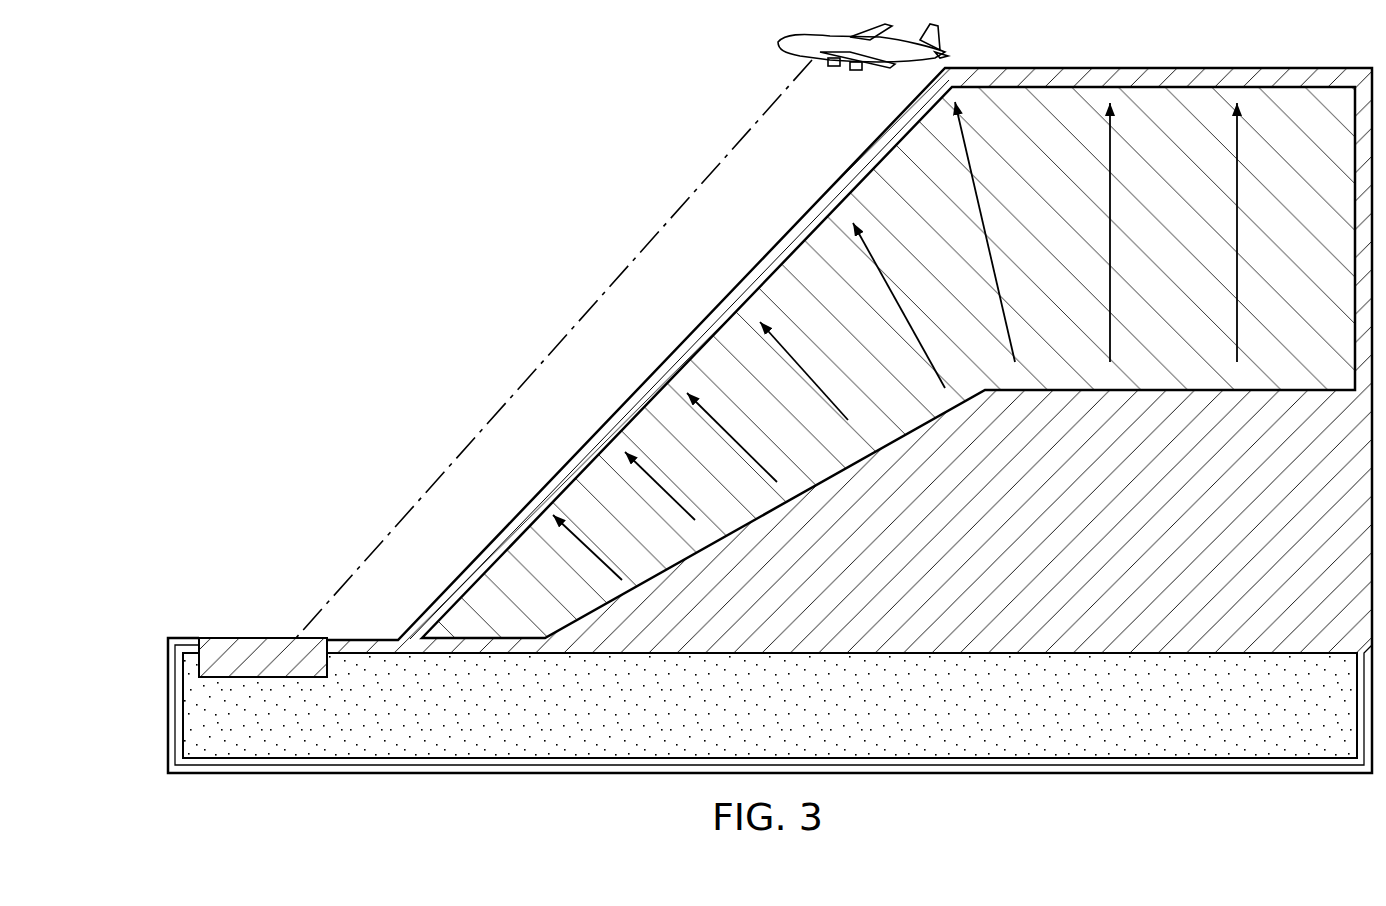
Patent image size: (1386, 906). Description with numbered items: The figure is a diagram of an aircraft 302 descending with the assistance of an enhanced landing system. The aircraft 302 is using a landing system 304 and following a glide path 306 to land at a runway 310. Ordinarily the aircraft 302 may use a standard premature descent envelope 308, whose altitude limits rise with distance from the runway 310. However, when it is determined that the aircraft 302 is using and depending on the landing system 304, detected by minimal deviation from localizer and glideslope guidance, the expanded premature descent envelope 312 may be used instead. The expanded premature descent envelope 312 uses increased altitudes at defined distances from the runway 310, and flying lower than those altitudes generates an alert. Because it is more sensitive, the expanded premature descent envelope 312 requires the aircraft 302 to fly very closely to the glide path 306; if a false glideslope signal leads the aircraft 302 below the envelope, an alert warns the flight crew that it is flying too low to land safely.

The aircraft 302 is at (938, 44).
The landing system 304 is at (327, 668).
The glide path 306 is at (733, 150).
The standard premature descent envelope 308 is at (1063, 390).
The runway 310 is at (181, 638).
The expanded premature descent envelope 312 is at (1142, 68).